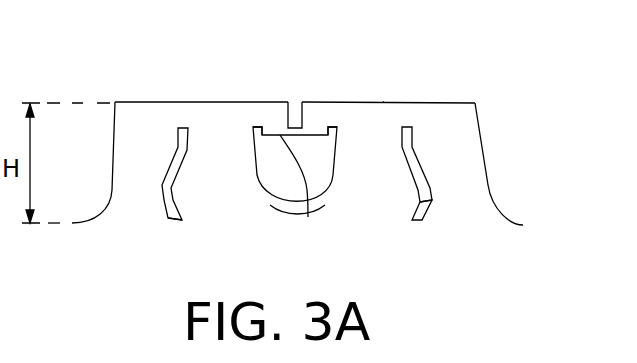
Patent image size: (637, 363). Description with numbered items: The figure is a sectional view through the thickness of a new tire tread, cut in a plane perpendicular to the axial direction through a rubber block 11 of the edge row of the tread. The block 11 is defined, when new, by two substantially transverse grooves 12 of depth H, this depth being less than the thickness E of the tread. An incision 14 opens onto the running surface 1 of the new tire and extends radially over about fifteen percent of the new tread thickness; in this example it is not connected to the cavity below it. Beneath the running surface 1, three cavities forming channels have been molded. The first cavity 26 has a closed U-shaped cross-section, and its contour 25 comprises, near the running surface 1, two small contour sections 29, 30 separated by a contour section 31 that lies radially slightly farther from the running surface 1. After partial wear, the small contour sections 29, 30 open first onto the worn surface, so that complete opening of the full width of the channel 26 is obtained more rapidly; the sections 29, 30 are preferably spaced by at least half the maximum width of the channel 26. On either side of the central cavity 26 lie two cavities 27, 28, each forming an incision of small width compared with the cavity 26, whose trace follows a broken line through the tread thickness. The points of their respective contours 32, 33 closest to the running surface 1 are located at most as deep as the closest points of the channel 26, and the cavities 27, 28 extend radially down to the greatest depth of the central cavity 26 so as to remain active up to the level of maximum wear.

The running surface 1 is at (383, 102).
The rubber block 11 is at (165, 88).
The groove 12 is at (87, 125).
The incision 14 is at (297, 108).
The contour 25 is at (335, 182).
The first cavity 26 is at (283, 198).
The cavity 27 is at (432, 202).
The cavity 28 is at (173, 222).
The small contour section 29 is at (260, 127).
The small contour section 30 is at (333, 128).
The contour section 31 is at (308, 217).
The contour 32 is at (188, 128).
The contour 33 is at (407, 128).